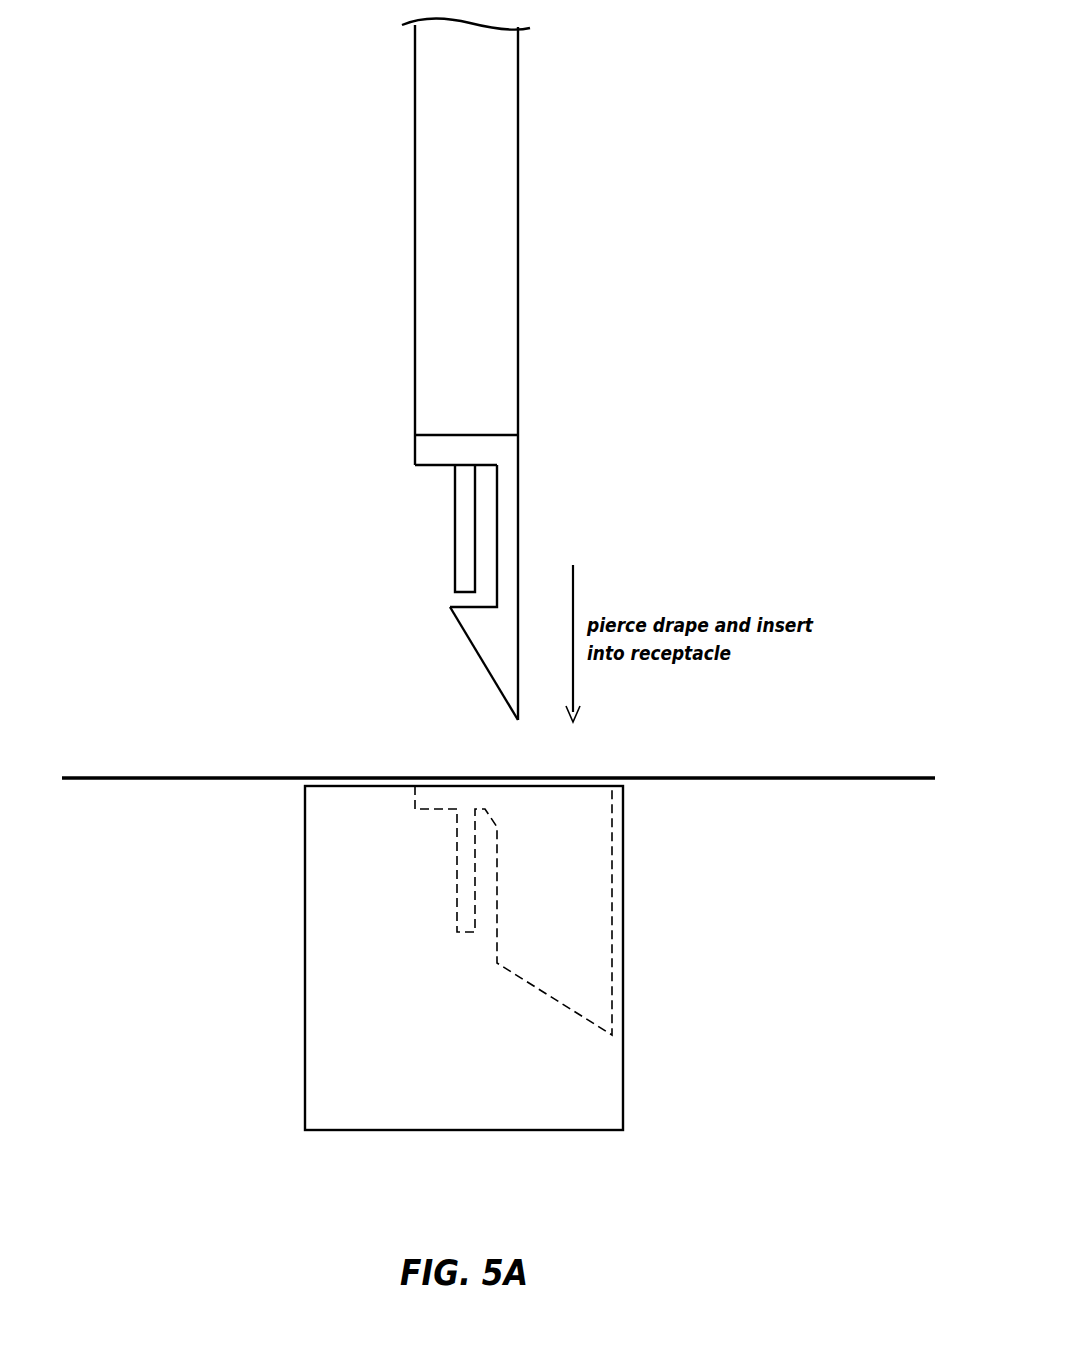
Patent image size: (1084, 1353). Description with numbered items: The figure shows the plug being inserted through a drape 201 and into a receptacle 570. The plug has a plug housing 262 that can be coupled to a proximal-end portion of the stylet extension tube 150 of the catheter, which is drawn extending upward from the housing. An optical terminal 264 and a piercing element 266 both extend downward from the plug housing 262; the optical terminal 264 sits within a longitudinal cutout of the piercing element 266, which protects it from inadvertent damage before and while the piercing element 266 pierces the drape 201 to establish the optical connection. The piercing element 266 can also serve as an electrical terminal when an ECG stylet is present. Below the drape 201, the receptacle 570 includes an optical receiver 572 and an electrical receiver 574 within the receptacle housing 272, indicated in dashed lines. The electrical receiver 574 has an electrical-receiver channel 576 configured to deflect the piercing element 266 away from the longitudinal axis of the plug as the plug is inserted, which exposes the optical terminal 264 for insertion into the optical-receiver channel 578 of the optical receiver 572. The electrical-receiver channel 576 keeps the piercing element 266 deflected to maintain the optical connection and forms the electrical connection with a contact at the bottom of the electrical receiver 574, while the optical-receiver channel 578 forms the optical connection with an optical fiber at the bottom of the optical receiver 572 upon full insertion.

The stylet extension tube 150 is at (502, 168).
The plug housing 262 is at (500, 455).
The optical terminal 264 is at (467, 528).
The piercing element 266 is at (485, 652).
The drape 201 is at (107, 776).
The receptacle housing 272 is at (623, 1073).
The receptacle 570 is at (188, 970).
The optical receiver 572 is at (462, 803).
The electrical receiver 574 is at (558, 805).
The electrical-receiver channel 576 is at (647, 805).
The optical-receiver channel 578 is at (277, 805).